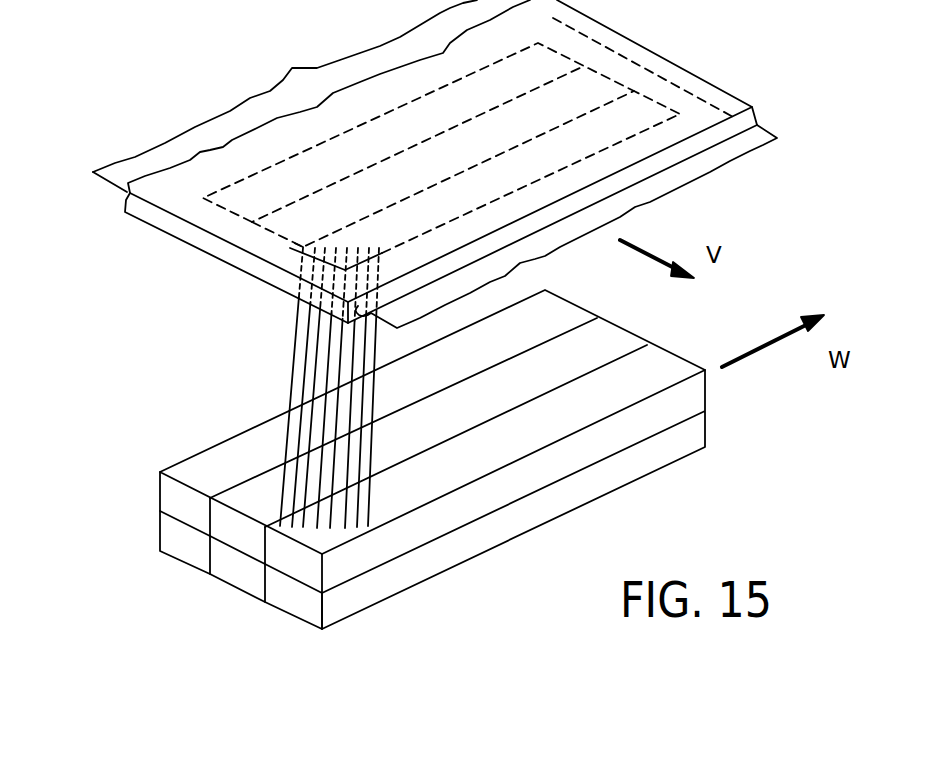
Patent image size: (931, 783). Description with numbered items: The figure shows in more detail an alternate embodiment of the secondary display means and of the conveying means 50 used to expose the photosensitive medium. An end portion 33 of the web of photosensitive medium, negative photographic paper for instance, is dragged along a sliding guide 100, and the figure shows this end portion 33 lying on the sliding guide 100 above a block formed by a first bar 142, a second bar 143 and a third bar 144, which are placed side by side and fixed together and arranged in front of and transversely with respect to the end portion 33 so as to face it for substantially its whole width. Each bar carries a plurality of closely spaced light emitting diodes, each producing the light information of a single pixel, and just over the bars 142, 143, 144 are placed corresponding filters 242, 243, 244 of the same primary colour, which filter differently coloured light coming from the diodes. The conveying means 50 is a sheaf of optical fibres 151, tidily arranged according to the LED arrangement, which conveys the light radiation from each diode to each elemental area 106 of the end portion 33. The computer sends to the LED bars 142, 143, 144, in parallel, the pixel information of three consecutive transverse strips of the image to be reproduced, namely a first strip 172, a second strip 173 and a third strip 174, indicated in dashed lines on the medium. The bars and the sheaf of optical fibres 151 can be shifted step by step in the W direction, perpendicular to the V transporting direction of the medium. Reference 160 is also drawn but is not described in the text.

The end portion 33 is at (703, 150).
The conveying means 50 is at (288, 373).
The sliding guide 100 is at (157, 222).
The elemental area 106 is at (306, 250).
The first bar 142 is at (293, 606).
The second bar 143 is at (245, 586).
The third bar 144 is at (165, 553).
The optical fibres 151 is at (290, 390).
The mask layer 160 is at (172, 0).
The first strip 172 is at (632, 118).
The second strip 173 is at (583, 95).
The third strip 174 is at (537, 68).
The filter 242 is at (296, 558).
The filter 243 is at (230, 528).
The filter 244 is at (173, 500).